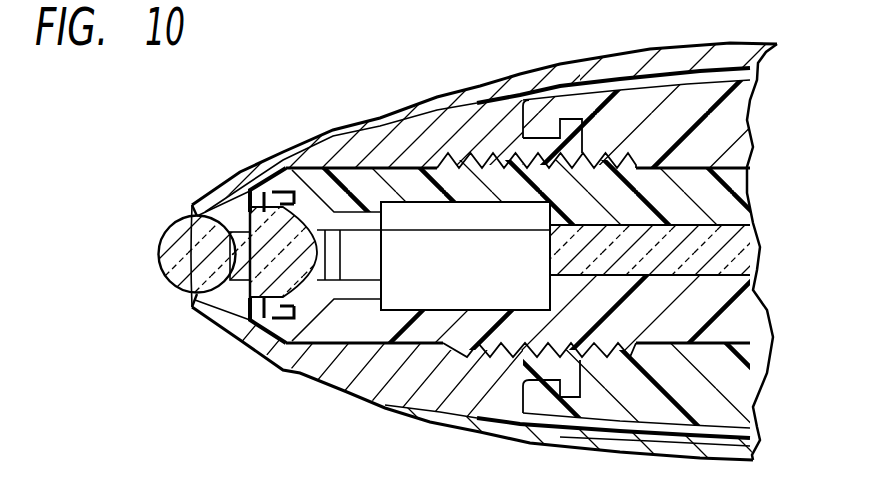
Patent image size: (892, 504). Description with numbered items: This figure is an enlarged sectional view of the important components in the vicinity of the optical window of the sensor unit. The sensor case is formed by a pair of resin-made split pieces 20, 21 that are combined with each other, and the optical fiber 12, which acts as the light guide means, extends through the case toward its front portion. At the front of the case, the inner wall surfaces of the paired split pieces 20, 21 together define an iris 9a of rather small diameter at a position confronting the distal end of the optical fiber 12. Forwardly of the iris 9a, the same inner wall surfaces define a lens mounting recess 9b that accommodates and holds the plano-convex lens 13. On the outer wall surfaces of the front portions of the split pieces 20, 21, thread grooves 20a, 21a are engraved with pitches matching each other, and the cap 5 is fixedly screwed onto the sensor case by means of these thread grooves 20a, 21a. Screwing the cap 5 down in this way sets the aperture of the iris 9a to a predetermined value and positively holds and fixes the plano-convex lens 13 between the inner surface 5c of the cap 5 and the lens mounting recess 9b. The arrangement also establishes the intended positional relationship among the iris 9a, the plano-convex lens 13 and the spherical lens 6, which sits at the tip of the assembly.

The cap 5 is at (340, 382).
The inner surface of the cap 5c is at (192, 206).
The spherical lens 6 is at (172, 283).
The plano-convex lens 13 is at (248, 232).
The iris 9a is at (337, 227).
The lens mounting recess 9b is at (285, 188).
The split piece 20 is at (660, 183).
The thread groove 20a is at (483, 150).
The split piece 21 is at (737, 322).
The thread groove 21a is at (463, 355).
The optical fiber 12 is at (717, 235).